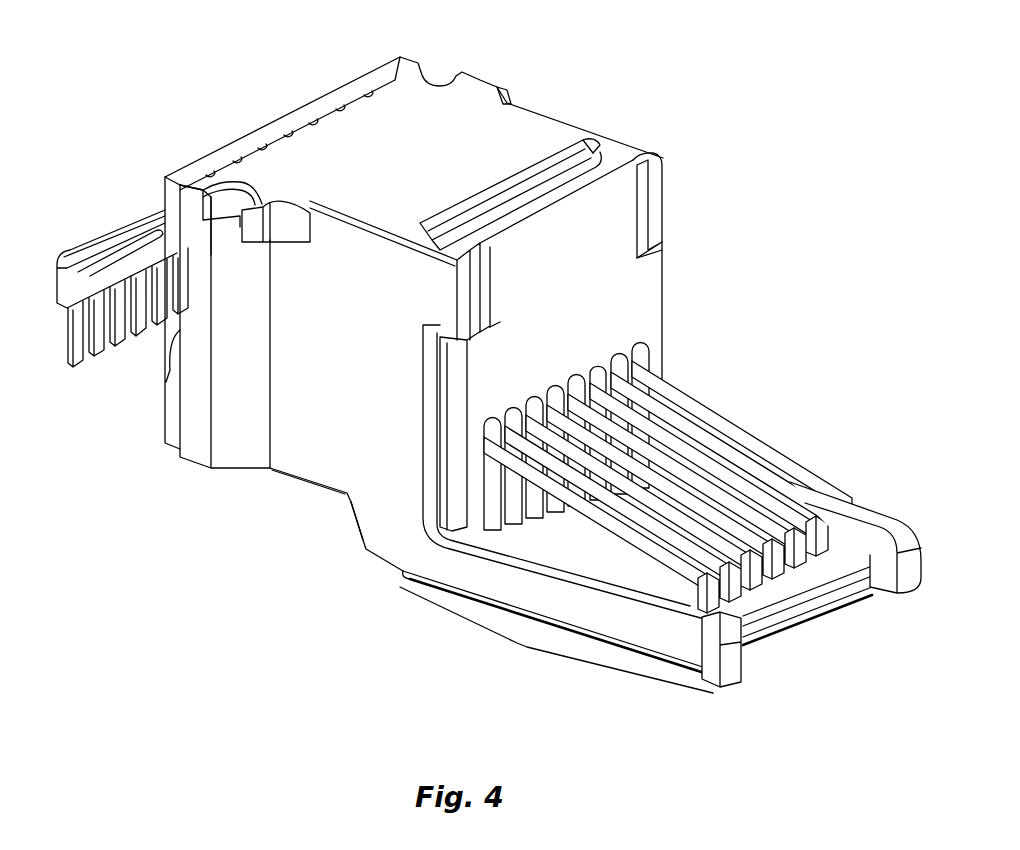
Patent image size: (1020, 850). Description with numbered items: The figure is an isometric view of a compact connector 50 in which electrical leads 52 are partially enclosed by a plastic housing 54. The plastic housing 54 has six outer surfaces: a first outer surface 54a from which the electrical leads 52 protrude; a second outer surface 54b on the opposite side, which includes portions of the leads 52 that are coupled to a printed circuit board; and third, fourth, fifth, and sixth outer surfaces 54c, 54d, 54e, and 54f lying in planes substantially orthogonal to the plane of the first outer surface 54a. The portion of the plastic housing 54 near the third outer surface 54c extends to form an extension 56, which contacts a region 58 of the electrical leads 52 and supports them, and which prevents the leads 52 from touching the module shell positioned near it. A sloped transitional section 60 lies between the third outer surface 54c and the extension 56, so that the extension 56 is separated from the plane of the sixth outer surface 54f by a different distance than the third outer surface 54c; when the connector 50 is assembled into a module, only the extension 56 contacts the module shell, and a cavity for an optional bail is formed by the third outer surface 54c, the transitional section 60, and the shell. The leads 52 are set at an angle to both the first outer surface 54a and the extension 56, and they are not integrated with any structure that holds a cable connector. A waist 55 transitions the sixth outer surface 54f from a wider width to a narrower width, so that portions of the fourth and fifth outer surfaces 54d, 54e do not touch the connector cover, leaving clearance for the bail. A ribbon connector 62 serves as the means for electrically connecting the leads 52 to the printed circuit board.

The connector 50 is at (602, 66).
The electrical leads 52 is at (78, 365).
The plastic housing 54 is at (722, 322).
The first outer surface 54a is at (585, 301).
The second outer surface 54b is at (180, 333).
The third outer surface 54c is at (350, 493).
The fourth outer surface 54d is at (368, 363).
The fifth outer surface 54e is at (586, 128).
The sixth outer surface 54f is at (417, 174).
The waist 55 is at (285, 228).
The extension 56 is at (518, 644).
The region of the electrical leads 58 is at (812, 515).
The transitional section 60 is at (362, 525).
The ribbon connector 62 is at (123, 243).